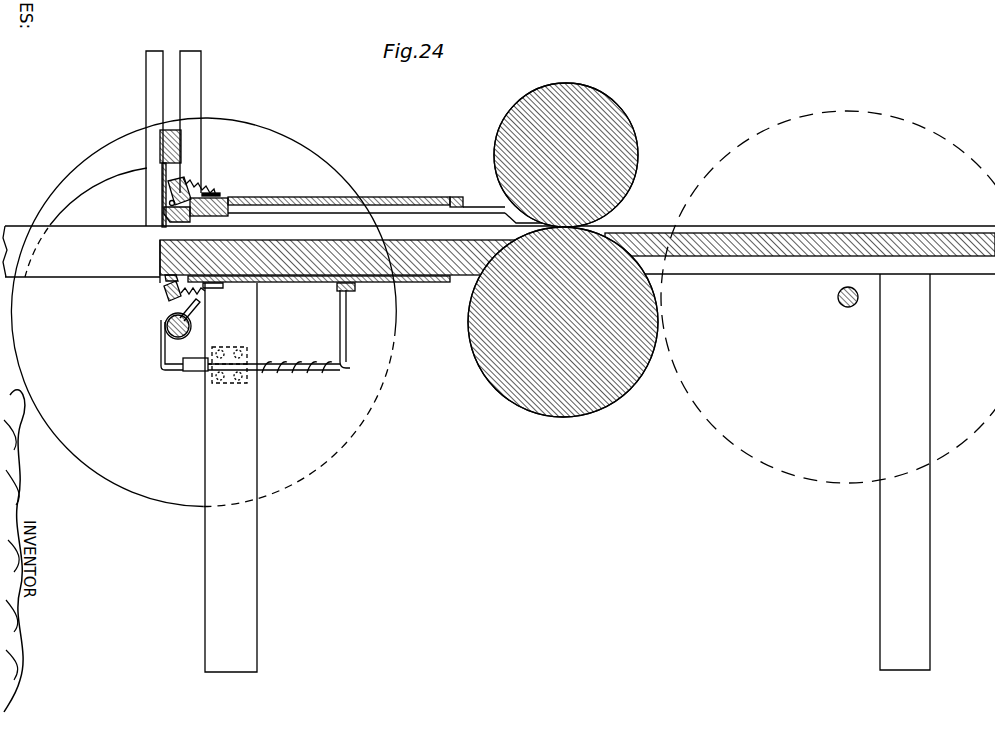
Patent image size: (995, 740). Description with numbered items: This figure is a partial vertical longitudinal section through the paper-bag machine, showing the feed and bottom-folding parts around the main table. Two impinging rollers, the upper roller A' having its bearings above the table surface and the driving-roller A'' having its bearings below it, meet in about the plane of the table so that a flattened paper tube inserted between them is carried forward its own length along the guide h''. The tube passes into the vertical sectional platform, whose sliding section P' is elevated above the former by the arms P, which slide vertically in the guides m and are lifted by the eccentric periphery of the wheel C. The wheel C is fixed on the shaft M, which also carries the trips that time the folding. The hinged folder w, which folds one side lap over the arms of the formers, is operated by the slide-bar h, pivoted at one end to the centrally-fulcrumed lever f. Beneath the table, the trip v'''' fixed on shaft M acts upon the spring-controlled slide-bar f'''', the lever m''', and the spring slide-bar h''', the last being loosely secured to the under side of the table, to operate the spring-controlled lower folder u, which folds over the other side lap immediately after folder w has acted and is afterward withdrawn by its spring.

The eccentric wheel C is at (203, 312).
The guides m is at (190, 109).
The arms P is at (190, 126).
The sliding section of the sectional platform P' is at (151, 194).
The hinged folder w is at (185, 180).
The slide-bar h is at (347, 198).
The centrally-fulcrumed lever f is at (456, 188).
The guide h'' is at (502, 209).
The upper impinging roller A' is at (566, 145).
The driving-roller A'' is at (563, 334).
The spring slide-bar h''' is at (319, 291).
The lever m''' is at (362, 296).
The lower folder u is at (165, 292).
The trip v'''' is at (209, 309).
The shaft M is at (191, 328).
The spring-controlled slide-bar f'''' is at (295, 371).